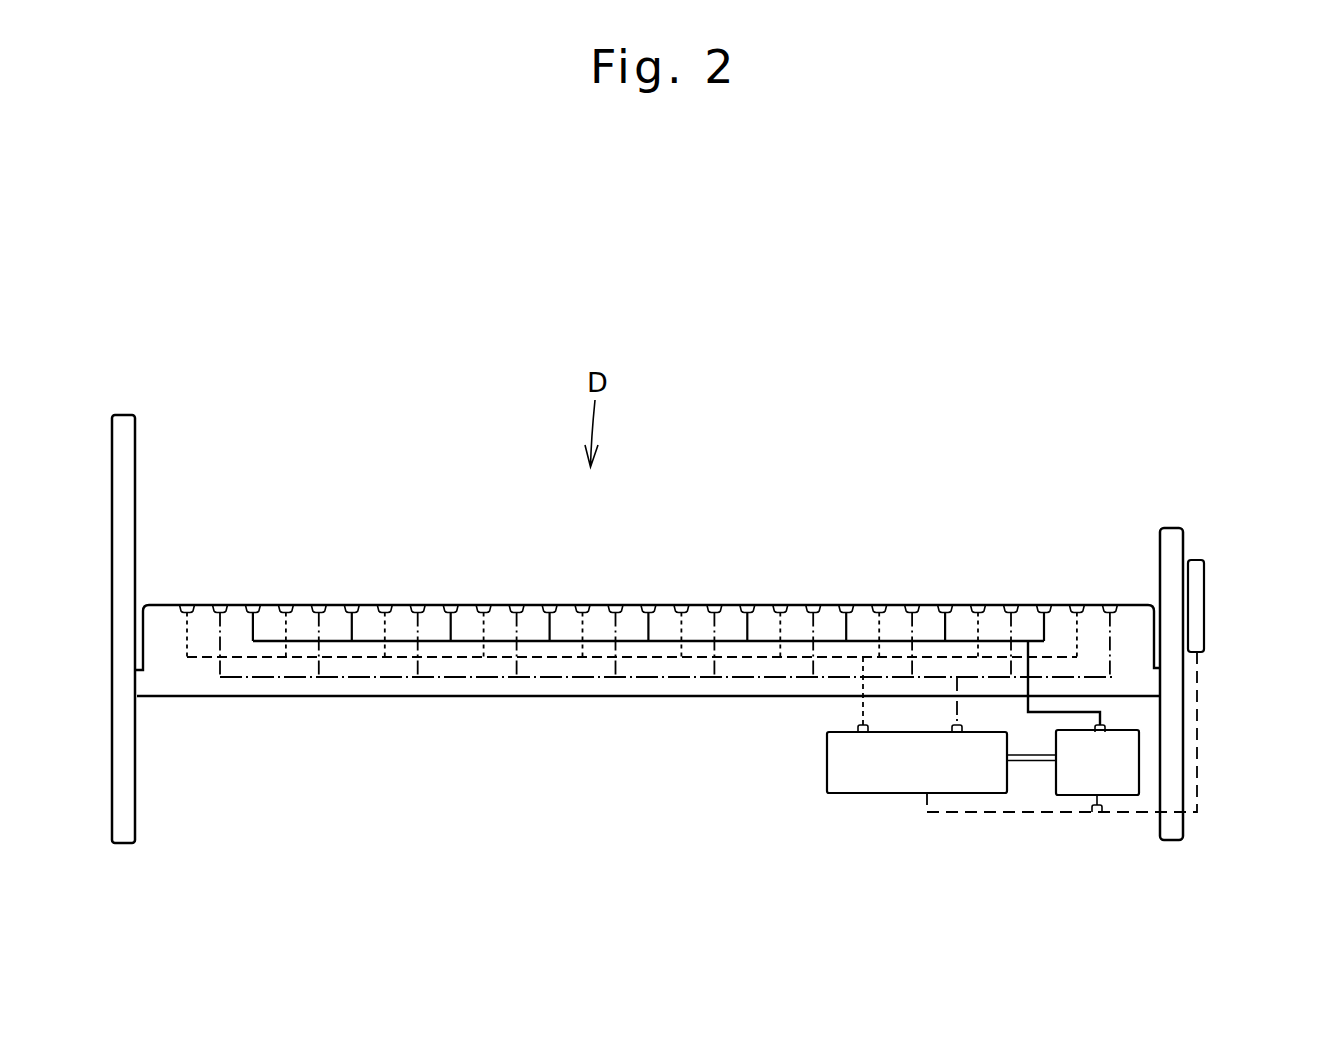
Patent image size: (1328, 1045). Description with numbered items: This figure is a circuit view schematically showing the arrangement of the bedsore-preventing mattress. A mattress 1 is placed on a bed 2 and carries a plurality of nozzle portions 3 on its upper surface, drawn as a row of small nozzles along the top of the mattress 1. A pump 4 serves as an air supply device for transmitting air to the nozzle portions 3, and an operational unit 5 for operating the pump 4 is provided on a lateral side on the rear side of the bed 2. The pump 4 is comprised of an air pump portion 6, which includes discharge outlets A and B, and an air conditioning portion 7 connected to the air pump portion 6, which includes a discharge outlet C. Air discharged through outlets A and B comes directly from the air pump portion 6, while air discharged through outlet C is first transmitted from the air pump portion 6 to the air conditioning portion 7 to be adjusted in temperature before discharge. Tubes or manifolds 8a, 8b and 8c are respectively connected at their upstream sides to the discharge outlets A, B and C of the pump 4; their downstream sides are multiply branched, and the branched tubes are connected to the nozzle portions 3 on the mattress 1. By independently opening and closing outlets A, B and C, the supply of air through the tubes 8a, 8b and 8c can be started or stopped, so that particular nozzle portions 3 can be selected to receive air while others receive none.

The mattress 1 is at (165, 613).
The bed 2 is at (135, 750).
The nozzle portion 3 is at (678, 606).
The pump 4 is at (983, 824).
The operational unit 5 is at (1206, 607).
The air pump portion 6 is at (977, 785).
The air conditioning portion 7 is at (1085, 793).
The tube 8a is at (863, 707).
The tube 8b is at (955, 700).
The tube 8c is at (1100, 712).